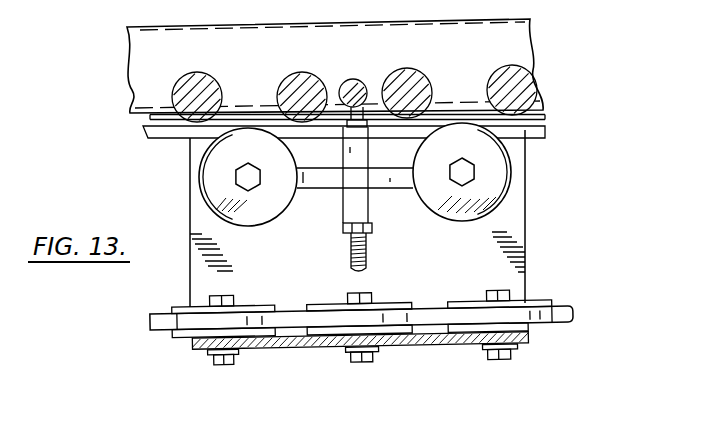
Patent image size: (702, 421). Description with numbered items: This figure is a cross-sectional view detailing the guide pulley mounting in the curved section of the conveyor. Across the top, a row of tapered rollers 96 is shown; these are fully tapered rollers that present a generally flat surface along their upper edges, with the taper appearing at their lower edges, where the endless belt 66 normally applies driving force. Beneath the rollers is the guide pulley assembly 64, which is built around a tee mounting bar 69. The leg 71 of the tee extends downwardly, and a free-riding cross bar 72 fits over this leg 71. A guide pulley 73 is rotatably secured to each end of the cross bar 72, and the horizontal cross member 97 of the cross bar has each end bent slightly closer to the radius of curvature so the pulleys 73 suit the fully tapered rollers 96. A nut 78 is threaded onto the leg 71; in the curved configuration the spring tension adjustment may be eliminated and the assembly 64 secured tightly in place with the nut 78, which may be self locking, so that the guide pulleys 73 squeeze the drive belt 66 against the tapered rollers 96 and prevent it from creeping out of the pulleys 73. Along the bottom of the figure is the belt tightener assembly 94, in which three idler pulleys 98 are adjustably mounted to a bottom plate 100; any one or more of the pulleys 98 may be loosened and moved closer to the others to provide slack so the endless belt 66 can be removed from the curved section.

The guide pulley assembly 64 is at (184, 170).
The endless belt 66 is at (560, 304).
The tee mounting bar 69 is at (368, 63).
The leg 71 is at (369, 255).
The cross bar 72 is at (343, 149).
The guide pulley 73 is at (204, 186).
The nut 78 is at (343, 228).
The belt tightener assembly 94 is at (437, 287).
The tapered rollers 96 is at (284, 78).
The horizontal cross member 97 is at (391, 180).
The idler pulleys 98 is at (310, 305).
The bottom plate 100 is at (283, 347).